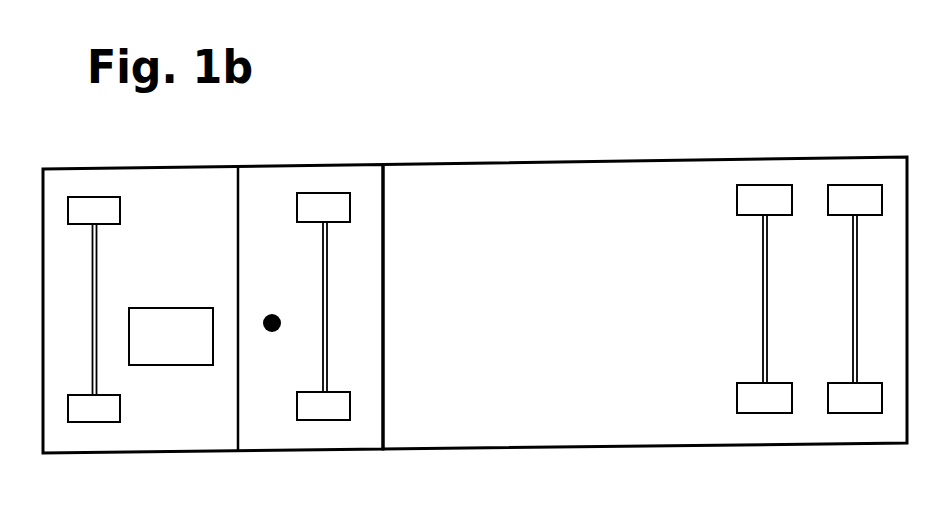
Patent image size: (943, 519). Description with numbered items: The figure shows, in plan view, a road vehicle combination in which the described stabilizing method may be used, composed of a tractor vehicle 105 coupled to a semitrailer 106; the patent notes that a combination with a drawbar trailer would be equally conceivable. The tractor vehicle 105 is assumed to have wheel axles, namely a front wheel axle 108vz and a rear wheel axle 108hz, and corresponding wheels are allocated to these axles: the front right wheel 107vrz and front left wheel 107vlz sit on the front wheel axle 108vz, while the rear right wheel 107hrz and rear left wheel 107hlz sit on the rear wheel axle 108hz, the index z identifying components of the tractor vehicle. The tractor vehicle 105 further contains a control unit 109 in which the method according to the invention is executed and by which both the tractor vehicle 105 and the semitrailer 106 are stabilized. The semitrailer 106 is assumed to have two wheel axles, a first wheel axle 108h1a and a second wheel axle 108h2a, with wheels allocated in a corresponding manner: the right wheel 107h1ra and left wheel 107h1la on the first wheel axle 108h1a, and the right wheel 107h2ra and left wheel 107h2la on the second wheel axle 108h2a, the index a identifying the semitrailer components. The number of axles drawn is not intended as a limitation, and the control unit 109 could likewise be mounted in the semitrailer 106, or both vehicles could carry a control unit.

The tractor vehicle 105 is at (178, 190).
The semitrailer 106 is at (515, 185).
The front right wheel of tractor vehicle 107vrz is at (92, 205).
The front left wheel of tractor vehicle 107vlz is at (92, 415).
The rear right wheel of tractor vehicle 107hrz is at (325, 205).
The rear left wheel of tractor vehicle 107hlz is at (323, 415).
The front wheel axle of tractor vehicle 108vz is at (125, 288).
The rear wheel axle of tractor vehicle 108hz is at (323, 290).
The control unit 109 is at (155, 365).
The right wheel of second semitrailer axle 107h2ra is at (766, 197).
The left wheel of second semitrailer axle 107h2la is at (765, 405).
The second wheel axle of semitrailer 108h2a is at (763, 278).
The right wheel of first semitrailer axle 107h1ra is at (843, 197).
The left wheel of first semitrailer axle 107h1la is at (843, 405).
The first wheel axle of semitrailer 108h1a is at (853, 278).